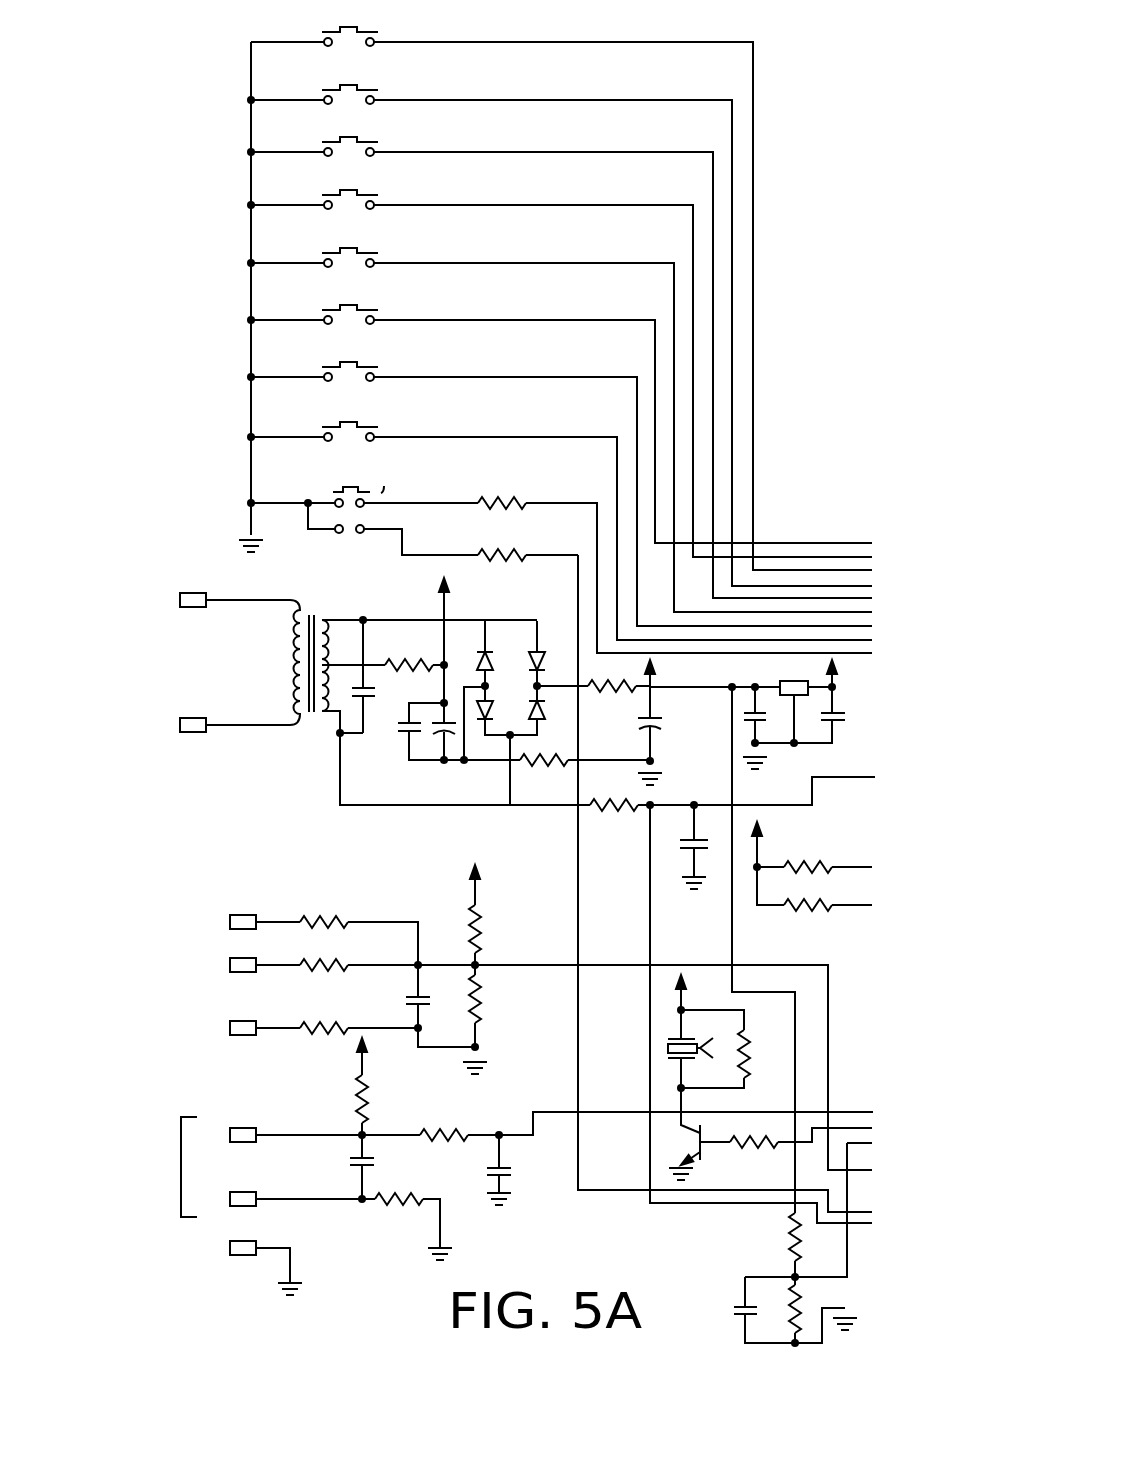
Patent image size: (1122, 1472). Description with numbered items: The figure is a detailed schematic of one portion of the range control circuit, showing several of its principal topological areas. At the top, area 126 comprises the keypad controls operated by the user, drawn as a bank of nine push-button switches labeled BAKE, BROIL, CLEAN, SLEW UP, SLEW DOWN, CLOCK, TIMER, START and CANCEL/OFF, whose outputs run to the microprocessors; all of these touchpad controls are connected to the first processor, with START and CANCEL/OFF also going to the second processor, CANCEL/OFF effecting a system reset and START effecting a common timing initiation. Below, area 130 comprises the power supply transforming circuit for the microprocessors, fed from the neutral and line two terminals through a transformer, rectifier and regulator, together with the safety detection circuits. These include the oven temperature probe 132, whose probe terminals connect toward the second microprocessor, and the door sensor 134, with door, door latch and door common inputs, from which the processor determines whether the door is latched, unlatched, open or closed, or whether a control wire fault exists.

The keypad controls area 126 is at (175, 220).
The power supply transforming circuit area 130 is at (165, 580).
The oven temperature probe 132 is at (170, 1232).
The door sensor 134 is at (197, 893).